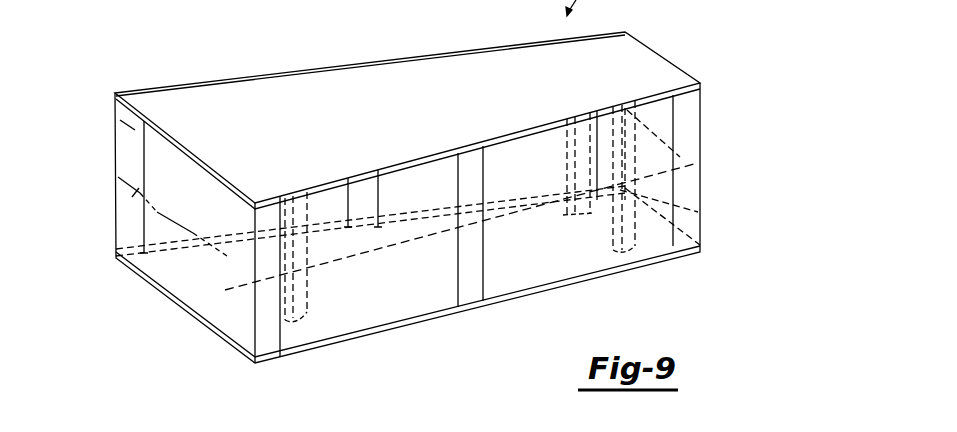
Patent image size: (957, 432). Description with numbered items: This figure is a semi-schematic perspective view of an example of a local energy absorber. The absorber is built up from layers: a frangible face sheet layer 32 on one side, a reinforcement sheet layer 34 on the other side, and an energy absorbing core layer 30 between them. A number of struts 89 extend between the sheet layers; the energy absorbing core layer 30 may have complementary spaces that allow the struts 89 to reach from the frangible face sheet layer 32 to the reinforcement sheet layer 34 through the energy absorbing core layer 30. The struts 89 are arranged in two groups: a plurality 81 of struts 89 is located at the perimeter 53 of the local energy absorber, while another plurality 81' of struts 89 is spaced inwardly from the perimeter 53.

The energy absorbing core layer 30 is at (152, 160).
The frangible face sheet layer 32 is at (632, 272).
The reinforcement sheet layer 34 is at (665, 55).
The perimeter 53 is at (118, 200).
The plurality of struts 81 is at (84, 236).
The another plurality of struts 81' is at (194, 271).
The struts 89 is at (126, 125).